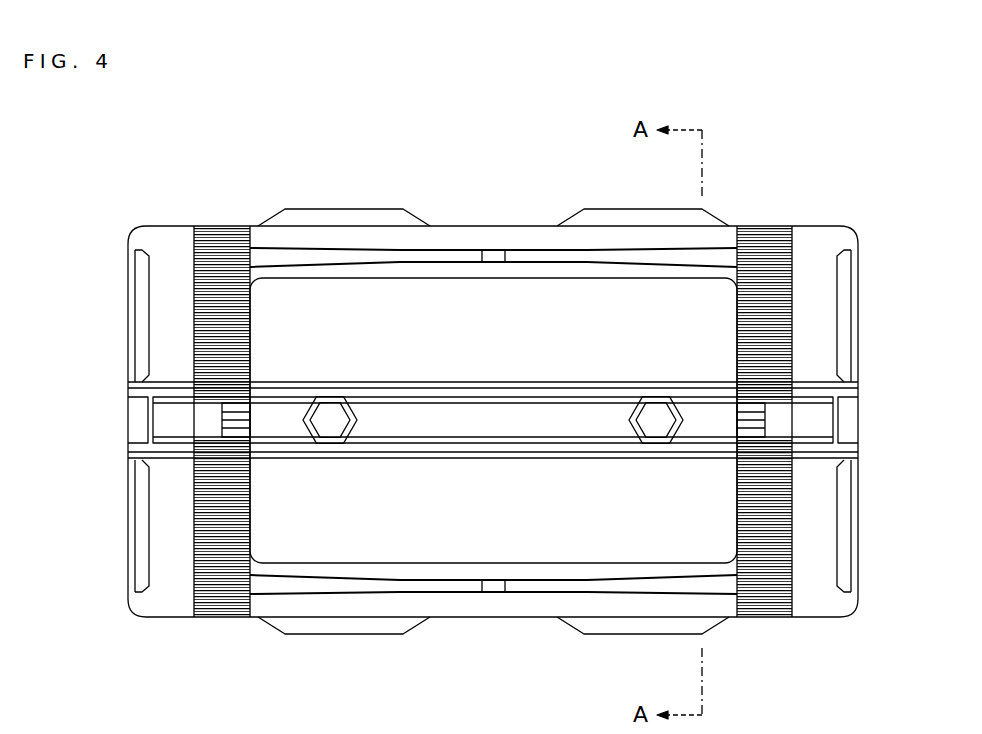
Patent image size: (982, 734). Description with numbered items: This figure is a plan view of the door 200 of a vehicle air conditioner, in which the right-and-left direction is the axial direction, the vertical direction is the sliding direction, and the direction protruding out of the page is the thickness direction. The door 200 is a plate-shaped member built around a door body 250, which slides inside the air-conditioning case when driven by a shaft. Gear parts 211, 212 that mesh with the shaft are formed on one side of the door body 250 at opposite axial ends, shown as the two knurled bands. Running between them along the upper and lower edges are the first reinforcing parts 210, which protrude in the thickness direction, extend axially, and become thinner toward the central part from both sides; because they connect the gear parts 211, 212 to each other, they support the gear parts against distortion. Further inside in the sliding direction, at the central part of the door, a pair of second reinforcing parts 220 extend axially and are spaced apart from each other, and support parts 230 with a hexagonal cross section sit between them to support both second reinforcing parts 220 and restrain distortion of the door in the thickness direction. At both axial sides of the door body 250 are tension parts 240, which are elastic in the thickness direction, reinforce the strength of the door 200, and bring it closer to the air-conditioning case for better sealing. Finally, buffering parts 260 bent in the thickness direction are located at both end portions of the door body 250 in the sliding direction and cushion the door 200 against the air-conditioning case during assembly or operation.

The door 200 is at (797, 212).
The first reinforcing parts 210 is at (470, 258).
The gear part 211 is at (197, 598).
The gear part 212 is at (790, 598).
The second reinforcing parts 220 is at (415, 452).
The support parts 230 is at (313, 445).
The tension parts 240 is at (128, 322).
The door body 250 is at (165, 233).
The buffering parts 260 is at (342, 207).